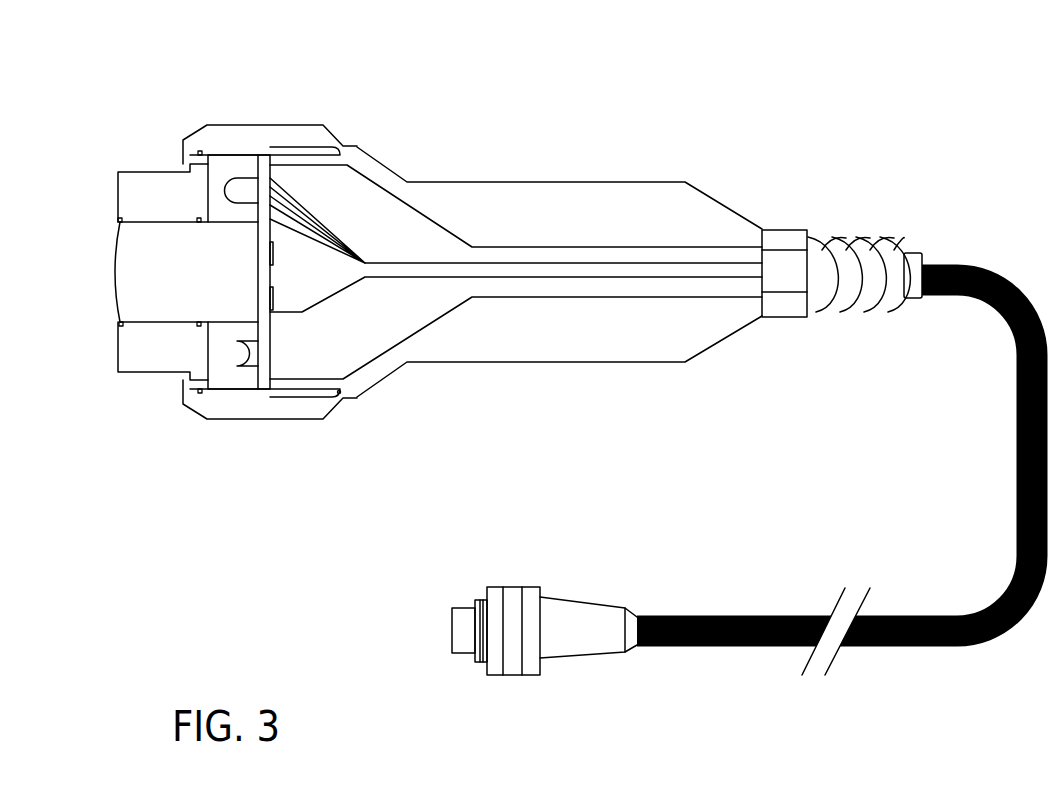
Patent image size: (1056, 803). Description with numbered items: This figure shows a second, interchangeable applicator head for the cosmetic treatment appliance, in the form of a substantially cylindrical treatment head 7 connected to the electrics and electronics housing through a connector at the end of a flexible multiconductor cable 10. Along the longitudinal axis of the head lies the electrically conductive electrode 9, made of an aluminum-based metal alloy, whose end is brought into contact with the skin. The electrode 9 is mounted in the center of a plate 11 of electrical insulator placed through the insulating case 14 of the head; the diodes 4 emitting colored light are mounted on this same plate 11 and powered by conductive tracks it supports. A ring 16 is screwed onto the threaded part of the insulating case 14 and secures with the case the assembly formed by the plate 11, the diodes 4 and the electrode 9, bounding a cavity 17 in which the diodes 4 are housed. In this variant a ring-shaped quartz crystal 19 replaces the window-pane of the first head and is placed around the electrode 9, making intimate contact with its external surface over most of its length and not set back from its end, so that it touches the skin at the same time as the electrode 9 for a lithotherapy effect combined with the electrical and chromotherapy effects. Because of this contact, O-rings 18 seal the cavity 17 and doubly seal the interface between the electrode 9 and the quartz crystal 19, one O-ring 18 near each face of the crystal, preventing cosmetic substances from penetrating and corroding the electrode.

The diodes 4 is at (245, 187).
The treatment head 7 is at (543, 357).
The electrode 9 is at (132, 267).
The flexible multiconductor cable 10 is at (1020, 422).
The plate 11 is at (263, 343).
The insulating case 14 is at (392, 172).
The ring 16 is at (222, 130).
The cavity 17 is at (220, 367).
The O-rings 18 is at (118, 220).
The quartz crystal 19 is at (152, 178).